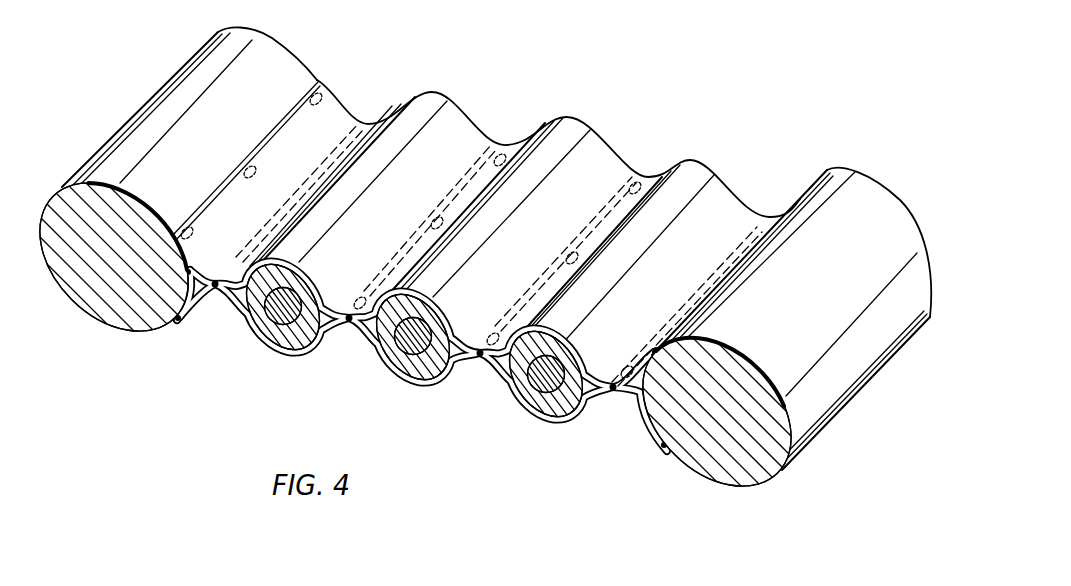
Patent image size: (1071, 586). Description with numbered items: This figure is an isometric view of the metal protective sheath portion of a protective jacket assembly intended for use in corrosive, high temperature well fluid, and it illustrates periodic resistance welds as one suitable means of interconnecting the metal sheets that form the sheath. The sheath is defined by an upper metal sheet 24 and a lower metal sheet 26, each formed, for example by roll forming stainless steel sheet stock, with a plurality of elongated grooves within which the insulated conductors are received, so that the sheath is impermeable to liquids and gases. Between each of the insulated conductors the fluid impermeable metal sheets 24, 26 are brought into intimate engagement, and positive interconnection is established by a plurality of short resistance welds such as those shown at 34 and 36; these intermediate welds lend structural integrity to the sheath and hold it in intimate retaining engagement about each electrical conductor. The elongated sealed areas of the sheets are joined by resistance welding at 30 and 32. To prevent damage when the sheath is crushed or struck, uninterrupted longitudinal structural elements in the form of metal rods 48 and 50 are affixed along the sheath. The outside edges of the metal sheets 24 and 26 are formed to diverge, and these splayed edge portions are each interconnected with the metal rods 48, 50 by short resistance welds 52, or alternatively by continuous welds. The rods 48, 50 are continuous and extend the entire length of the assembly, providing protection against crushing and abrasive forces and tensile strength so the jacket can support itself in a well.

The upper metal sheet 24 is at (452, 113).
The lower metal sheet 26 is at (557, 418).
The resistance weld 30 is at (376, 123).
The resistance weld 32 is at (767, 220).
The short resistance weld 34 is at (354, 323).
The short resistance weld 36 is at (485, 360).
The metal rod 48 is at (127, 329).
The metal rod 50 is at (705, 474).
The short resistance welds 52 is at (243, 168).